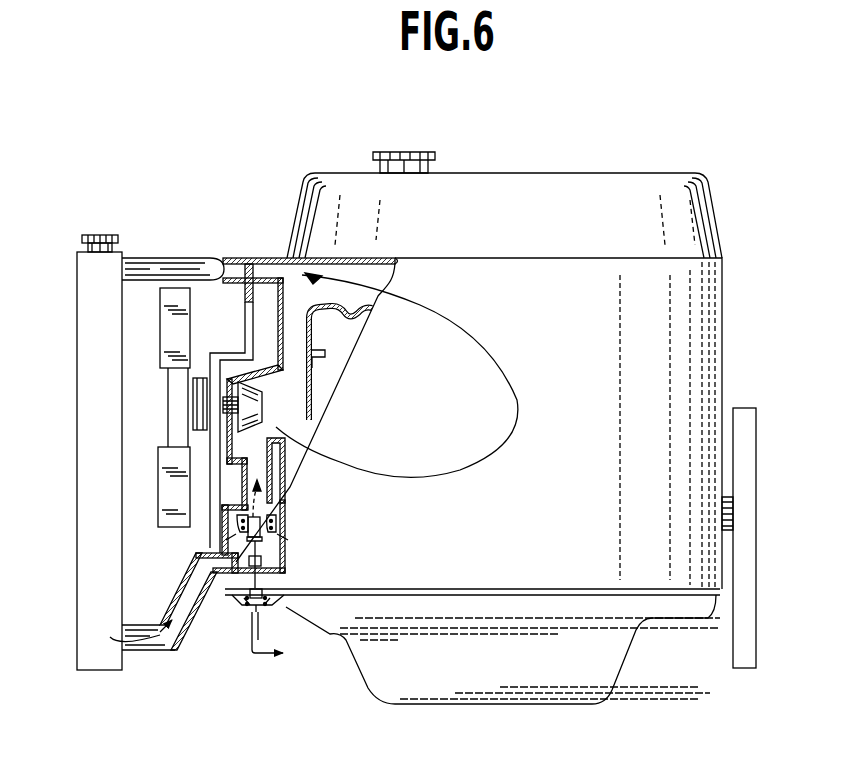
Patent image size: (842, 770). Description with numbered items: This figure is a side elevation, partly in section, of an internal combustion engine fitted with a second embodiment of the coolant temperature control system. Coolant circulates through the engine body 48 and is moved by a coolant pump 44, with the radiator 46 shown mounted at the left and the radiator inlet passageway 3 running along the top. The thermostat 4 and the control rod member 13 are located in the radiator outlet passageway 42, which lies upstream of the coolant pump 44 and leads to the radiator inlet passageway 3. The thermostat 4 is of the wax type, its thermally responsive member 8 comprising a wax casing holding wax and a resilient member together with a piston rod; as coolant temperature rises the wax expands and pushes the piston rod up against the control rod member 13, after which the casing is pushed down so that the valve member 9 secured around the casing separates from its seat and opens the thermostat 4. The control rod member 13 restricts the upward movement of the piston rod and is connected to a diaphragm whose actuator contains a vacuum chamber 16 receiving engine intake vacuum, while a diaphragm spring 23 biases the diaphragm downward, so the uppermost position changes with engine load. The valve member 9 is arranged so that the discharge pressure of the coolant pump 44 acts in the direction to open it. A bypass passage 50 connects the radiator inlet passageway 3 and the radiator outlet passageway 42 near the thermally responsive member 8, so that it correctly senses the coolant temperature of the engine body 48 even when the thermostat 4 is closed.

The radiator inlet passageway 3 is at (244, 265).
The thermostat 4 is at (287, 521).
The thermally responsive member 8 is at (284, 518).
The valve member 9 is at (237, 521).
The control rod member 13 is at (263, 561).
The vacuum chamber 16 is at (262, 604).
The diaphragm spring 23 is at (246, 607).
The radiator outlet passageway 42 is at (195, 585).
The coolant pump 44 is at (262, 406).
The radiator 46 is at (77, 283).
The engine body 48 is at (732, 318).
The bypass passage 50 is at (213, 455).